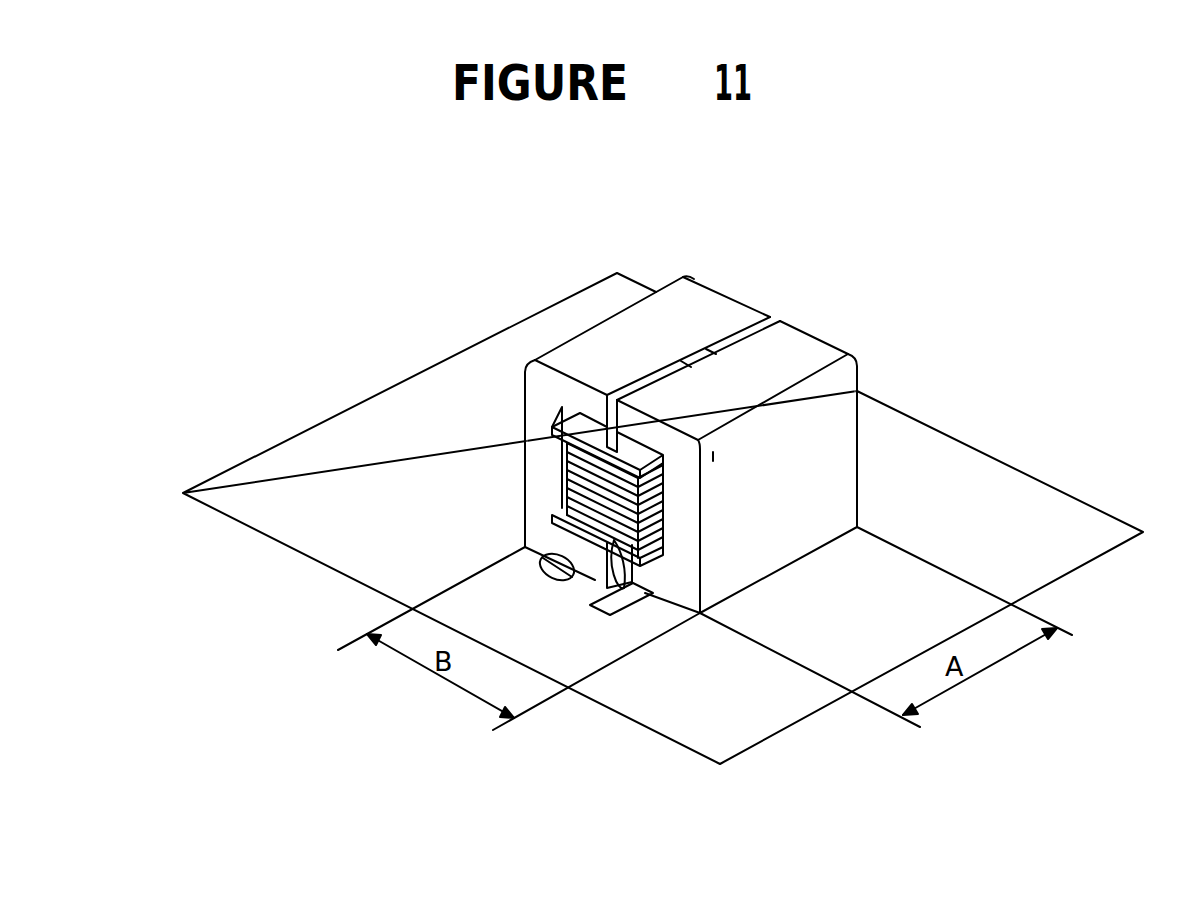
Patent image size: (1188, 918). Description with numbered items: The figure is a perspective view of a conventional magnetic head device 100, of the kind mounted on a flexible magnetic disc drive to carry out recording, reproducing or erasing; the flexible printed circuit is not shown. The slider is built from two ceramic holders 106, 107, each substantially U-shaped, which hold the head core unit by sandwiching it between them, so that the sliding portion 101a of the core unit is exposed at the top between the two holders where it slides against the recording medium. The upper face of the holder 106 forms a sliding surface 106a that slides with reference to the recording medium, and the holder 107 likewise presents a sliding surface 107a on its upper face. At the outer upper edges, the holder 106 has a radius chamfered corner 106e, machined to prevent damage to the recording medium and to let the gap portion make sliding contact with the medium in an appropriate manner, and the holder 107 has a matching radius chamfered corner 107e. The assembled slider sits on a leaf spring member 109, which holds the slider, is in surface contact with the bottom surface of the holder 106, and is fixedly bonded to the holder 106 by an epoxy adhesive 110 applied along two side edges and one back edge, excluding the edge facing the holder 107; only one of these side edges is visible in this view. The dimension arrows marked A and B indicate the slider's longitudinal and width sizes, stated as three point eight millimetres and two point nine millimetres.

The magnetic head device 100 is at (892, 259).
The sliding portion 101a is at (772, 318).
The holder 106 is at (556, 372).
The sliding surface 106a is at (715, 310).
The radius chamfered corner 106e is at (532, 362).
The holder 107 is at (749, 452).
The sliding surface 107a is at (797, 358).
The radius chamfered corner 107e is at (853, 367).
The spring member 109 is at (996, 456).
The epoxy adhesive 110 is at (548, 573).